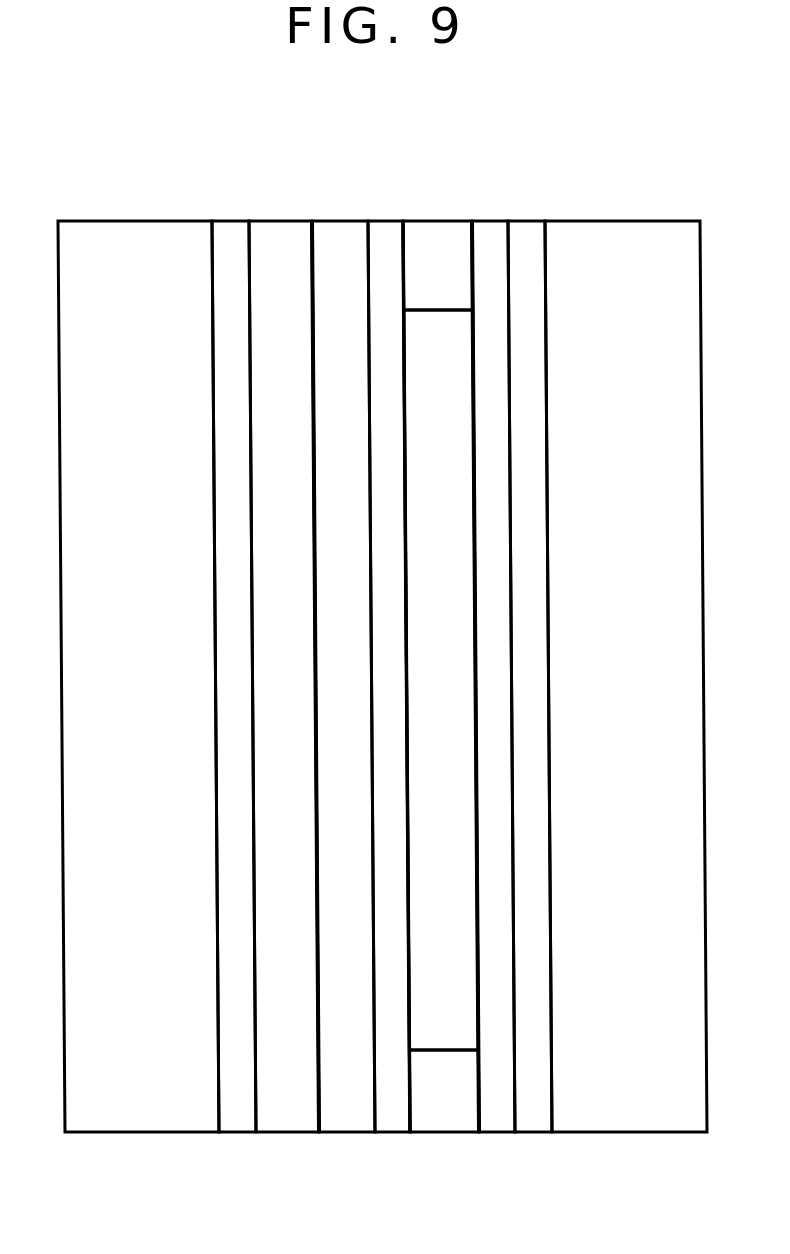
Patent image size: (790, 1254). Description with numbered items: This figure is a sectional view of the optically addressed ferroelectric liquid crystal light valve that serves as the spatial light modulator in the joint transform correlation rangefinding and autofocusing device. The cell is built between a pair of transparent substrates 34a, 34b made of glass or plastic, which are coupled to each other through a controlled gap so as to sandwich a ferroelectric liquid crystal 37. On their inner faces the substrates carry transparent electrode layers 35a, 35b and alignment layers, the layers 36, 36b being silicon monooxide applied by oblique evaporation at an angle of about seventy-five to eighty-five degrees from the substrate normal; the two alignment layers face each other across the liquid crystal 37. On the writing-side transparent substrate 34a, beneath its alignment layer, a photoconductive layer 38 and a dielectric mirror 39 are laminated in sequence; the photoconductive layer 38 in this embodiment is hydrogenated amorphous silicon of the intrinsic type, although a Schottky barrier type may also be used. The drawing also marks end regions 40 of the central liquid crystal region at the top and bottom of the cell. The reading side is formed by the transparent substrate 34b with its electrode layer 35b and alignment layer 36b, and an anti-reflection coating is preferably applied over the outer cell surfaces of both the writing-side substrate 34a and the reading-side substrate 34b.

The transparent substrate 34a is at (118, 247).
The transparent substrate 34b is at (605, 245).
The transparent electrode layer 35a is at (223, 235).
The transparent electrode layer 35b is at (523, 245).
The barrier layer 36 is at (397, 1118).
The alignment layer 36b is at (500, 1118).
The ferroelectric liquid crystal 37 is at (438, 333).
The photoconductive layer 38 is at (295, 1117).
The dielectric mirror 39 is at (332, 242).
The end portion of active layer 40 is at (425, 240).